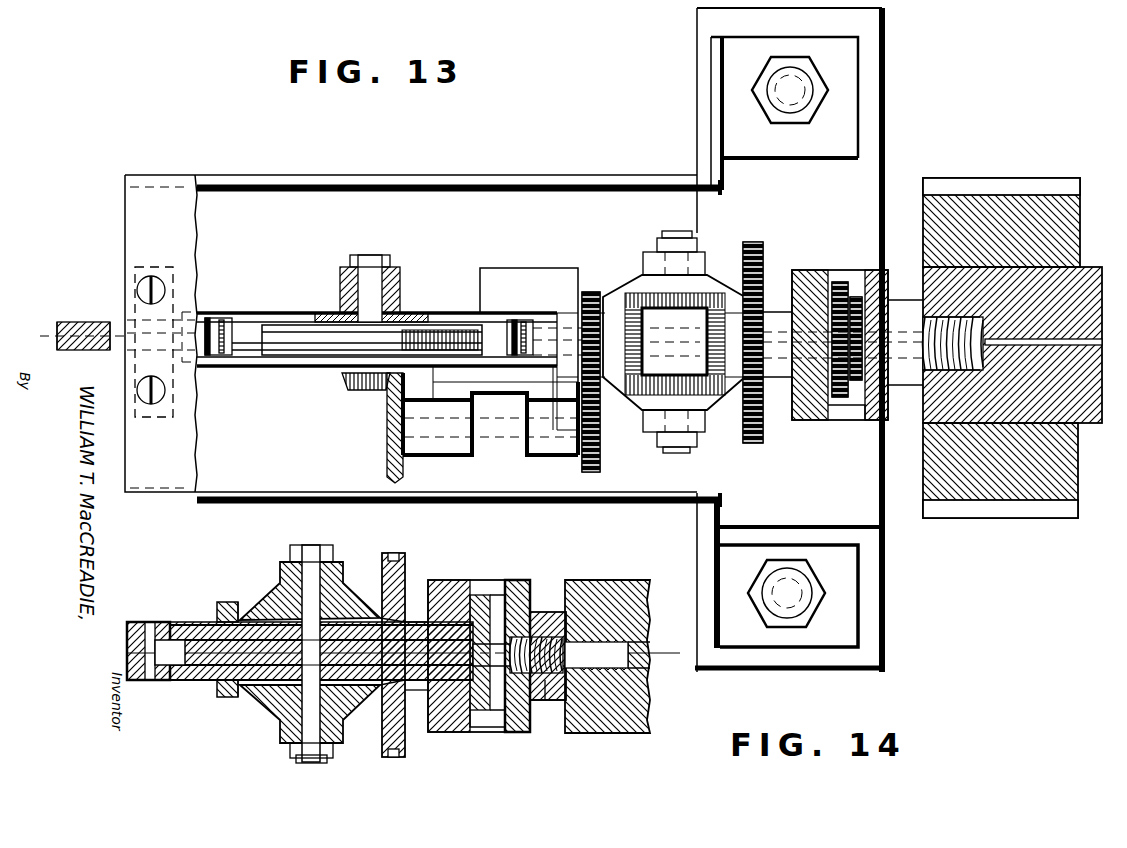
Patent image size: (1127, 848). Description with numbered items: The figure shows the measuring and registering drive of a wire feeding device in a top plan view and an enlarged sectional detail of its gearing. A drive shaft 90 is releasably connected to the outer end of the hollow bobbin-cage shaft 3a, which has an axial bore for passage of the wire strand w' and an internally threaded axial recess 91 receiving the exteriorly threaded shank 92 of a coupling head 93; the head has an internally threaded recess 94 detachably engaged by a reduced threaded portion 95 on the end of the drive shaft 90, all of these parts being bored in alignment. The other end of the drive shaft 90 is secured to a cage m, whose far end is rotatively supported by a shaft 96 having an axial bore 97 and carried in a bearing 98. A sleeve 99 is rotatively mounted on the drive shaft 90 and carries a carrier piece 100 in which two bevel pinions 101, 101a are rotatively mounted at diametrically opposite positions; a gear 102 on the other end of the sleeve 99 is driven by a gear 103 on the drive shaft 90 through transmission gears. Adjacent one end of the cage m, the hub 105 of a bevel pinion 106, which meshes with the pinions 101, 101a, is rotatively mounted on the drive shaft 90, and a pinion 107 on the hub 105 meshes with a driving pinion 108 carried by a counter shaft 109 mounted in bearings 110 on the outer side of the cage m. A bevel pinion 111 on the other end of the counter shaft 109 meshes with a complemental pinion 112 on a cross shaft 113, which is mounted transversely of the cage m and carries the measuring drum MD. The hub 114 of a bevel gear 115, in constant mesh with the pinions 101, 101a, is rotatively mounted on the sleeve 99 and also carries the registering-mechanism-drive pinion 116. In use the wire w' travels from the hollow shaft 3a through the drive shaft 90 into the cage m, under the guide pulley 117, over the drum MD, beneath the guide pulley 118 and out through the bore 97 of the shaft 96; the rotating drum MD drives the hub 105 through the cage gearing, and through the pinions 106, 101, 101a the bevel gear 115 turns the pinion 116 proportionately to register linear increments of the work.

In FIG. 13, the drive shaft 90 is at (778, 377).
In FIG. 14, the drive shaft 90 is at (198, 622).
In FIG. 13, the internally threaded axial recess 91 is at (938, 340).
In FIG. 14, the internally threaded axial recess 91 is at (592, 625).
In FIG. 13, the exteriorly threaded shank 92 is at (930, 370).
In FIG. 14, the exteriorly threaded shank 92 is at (590, 690).
In FIG. 13, the coupling head 93 is at (950, 312).
In FIG. 14, the coupling head 93 is at (552, 612).
In FIG. 14, the internally threaded recess 94 is at (550, 700).
In FIG. 14, the reduced threaded portion 95 is at (506, 700).
In FIG. 13, the shaft 96 is at (98, 322).
In FIG. 13, the axial bore 97 is at (66, 322).
In FIG. 13, the bearing 98 is at (136, 270).
In FIG. 14, the sleeve 99 is at (412, 683).
In FIG. 14, the carrier piece 100 is at (282, 712).
In FIG. 13, the bevel pinion 101 is at (634, 275).
In FIG. 14, the bevel pinion 101 is at (282, 578).
In FIG. 13, the bevel pinion 101a is at (648, 410).
In FIG. 14, the bevel pinion 101a is at (352, 738).
In FIG. 13, the gear 102 is at (836, 282).
In FIG. 14, the gear 102 is at (480, 595).
In FIG. 13, the gear 103 is at (858, 405).
In FIG. 14, the hub 105 is at (200, 680).
In FIG. 14, the bevel pinion 106 is at (240, 605).
In FIG. 13, the pinion 107 is at (590, 290).
In FIG. 14, the pinion 107 is at (226, 698).
In FIG. 13, the driving pinion 108 is at (590, 474).
In FIG. 13, the counter shaft 109 is at (505, 450).
In FIG. 13, the bearings 110 is at (458, 455).
In FIG. 13, the bevel pinion 111 is at (388, 455).
In FIG. 13, the complemental pinion 112 is at (347, 390).
In FIG. 13, the cross shaft 113 is at (372, 277).
In FIG. 13, the hub 114 is at (776, 318).
In FIG. 14, the hub 114 is at (412, 622).
In FIG. 13, the bevel gear 115 is at (742, 297).
In FIG. 14, the bevel gear 115 is at (385, 618).
In FIG. 13, the registering-mechanism-drive pinion 116 is at (754, 443).
In FIG. 14, the registering-mechanism-drive pinion 116 is at (393, 757).
In FIG. 13, the guide pulley 117 is at (512, 320).
In FIG. 13, the guide pulley 118 is at (222, 318).
In FIG. 13, the cage m is at (296, 313).
In FIG. 13, the measuring drum MD is at (282, 352).
In FIG. 13, the wire strand w' is at (372, 382).
In FIG. 13, the frame member 3a is at (1012, 425).
In FIG. 14, the frame member 3a is at (640, 585).